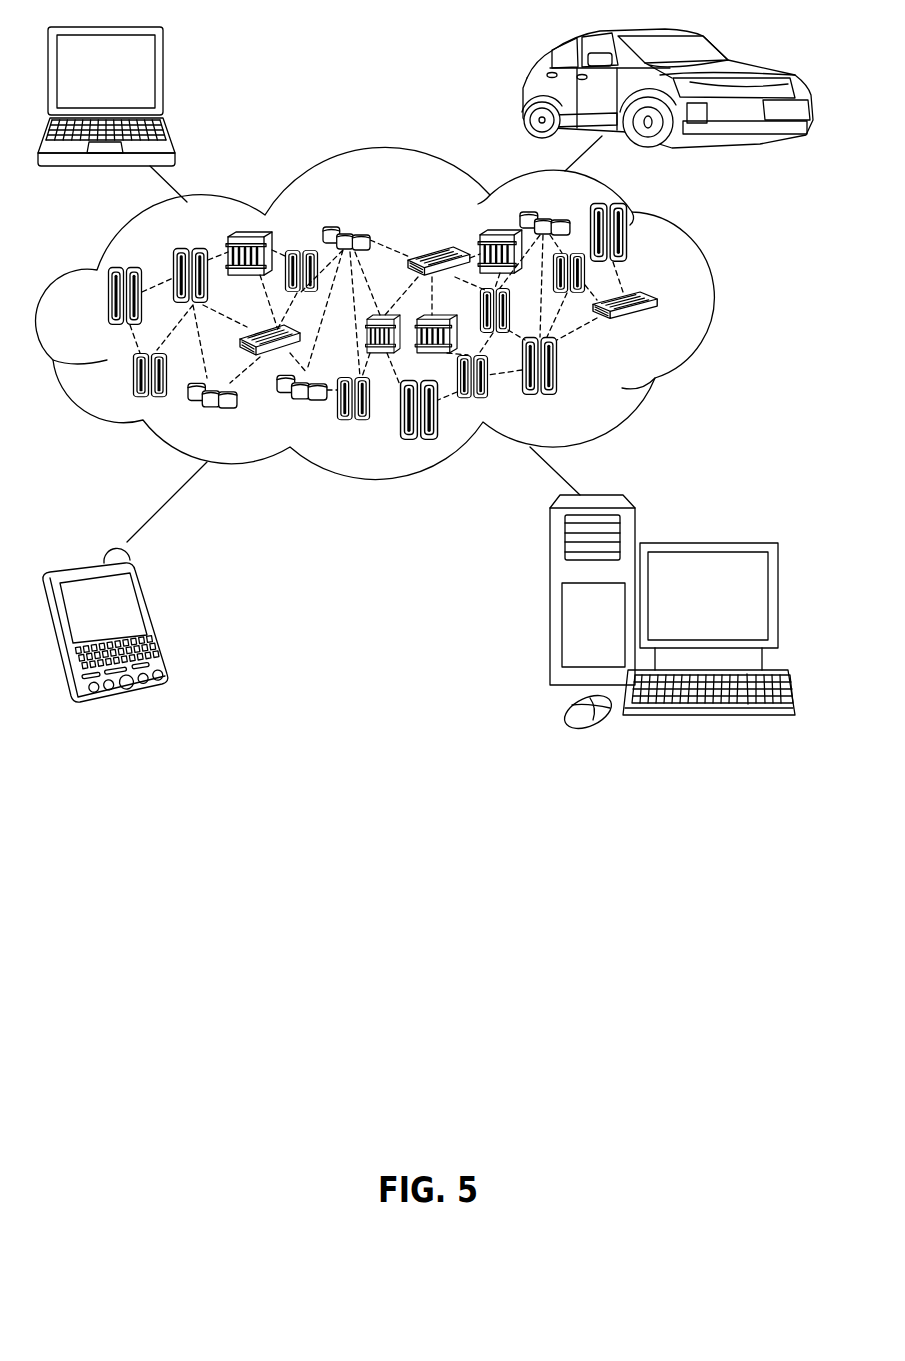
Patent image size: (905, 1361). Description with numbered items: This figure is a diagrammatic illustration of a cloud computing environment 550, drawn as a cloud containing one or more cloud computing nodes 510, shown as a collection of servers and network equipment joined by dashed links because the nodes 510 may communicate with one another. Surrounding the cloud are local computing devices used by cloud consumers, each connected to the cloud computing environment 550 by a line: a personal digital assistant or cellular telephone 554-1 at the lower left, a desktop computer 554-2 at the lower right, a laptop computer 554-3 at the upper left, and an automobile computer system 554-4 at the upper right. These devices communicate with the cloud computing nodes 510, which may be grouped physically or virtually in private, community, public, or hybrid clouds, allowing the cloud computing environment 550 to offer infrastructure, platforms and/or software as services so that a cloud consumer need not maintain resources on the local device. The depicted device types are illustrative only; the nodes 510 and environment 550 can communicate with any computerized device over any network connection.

The cloud computing nodes 510 is at (657, 329).
The cloud computing environment 550 is at (767, 308).
The personal digital assistant or cellular telephone 554-1 is at (234, 619).
The desktop computer 554-2 is at (743, 512).
The laptop computer 554-3 is at (240, 62).
The automobile computer system 554-4 is at (524, 96).